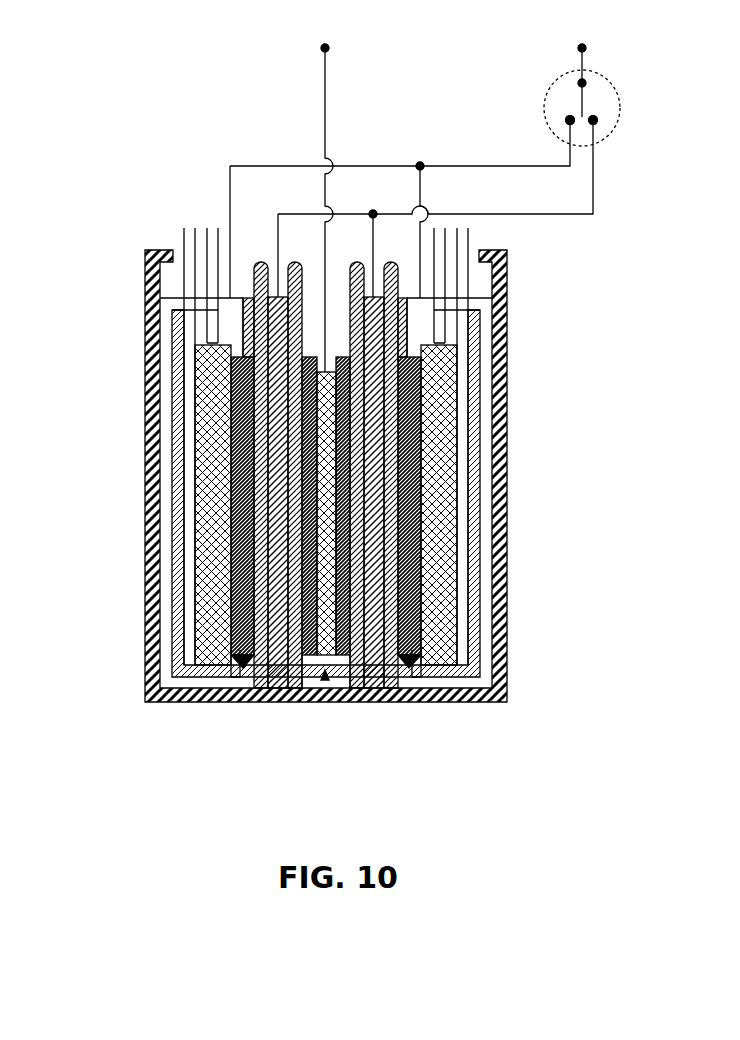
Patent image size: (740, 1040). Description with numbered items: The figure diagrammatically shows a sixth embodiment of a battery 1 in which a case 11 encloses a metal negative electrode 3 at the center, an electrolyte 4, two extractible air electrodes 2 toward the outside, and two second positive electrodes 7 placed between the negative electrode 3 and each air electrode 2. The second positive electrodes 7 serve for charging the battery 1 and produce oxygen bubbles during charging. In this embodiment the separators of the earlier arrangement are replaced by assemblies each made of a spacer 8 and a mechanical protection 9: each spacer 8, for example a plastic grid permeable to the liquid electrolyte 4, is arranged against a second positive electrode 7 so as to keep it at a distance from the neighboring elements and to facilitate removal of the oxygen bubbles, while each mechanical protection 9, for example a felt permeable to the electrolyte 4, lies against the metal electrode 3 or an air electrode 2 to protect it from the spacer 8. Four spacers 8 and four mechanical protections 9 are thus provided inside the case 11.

The battery 1 is at (112, 221).
The air electrode 2 is at (143, 367).
The negative electrode 3 is at (420, 473).
The electrolyte 4 is at (327, 703).
The second positive electrode 7 is at (178, 700).
The spacer 8 is at (292, 703).
The mechanical protection 9 is at (205, 548).
The case 11 is at (142, 430).